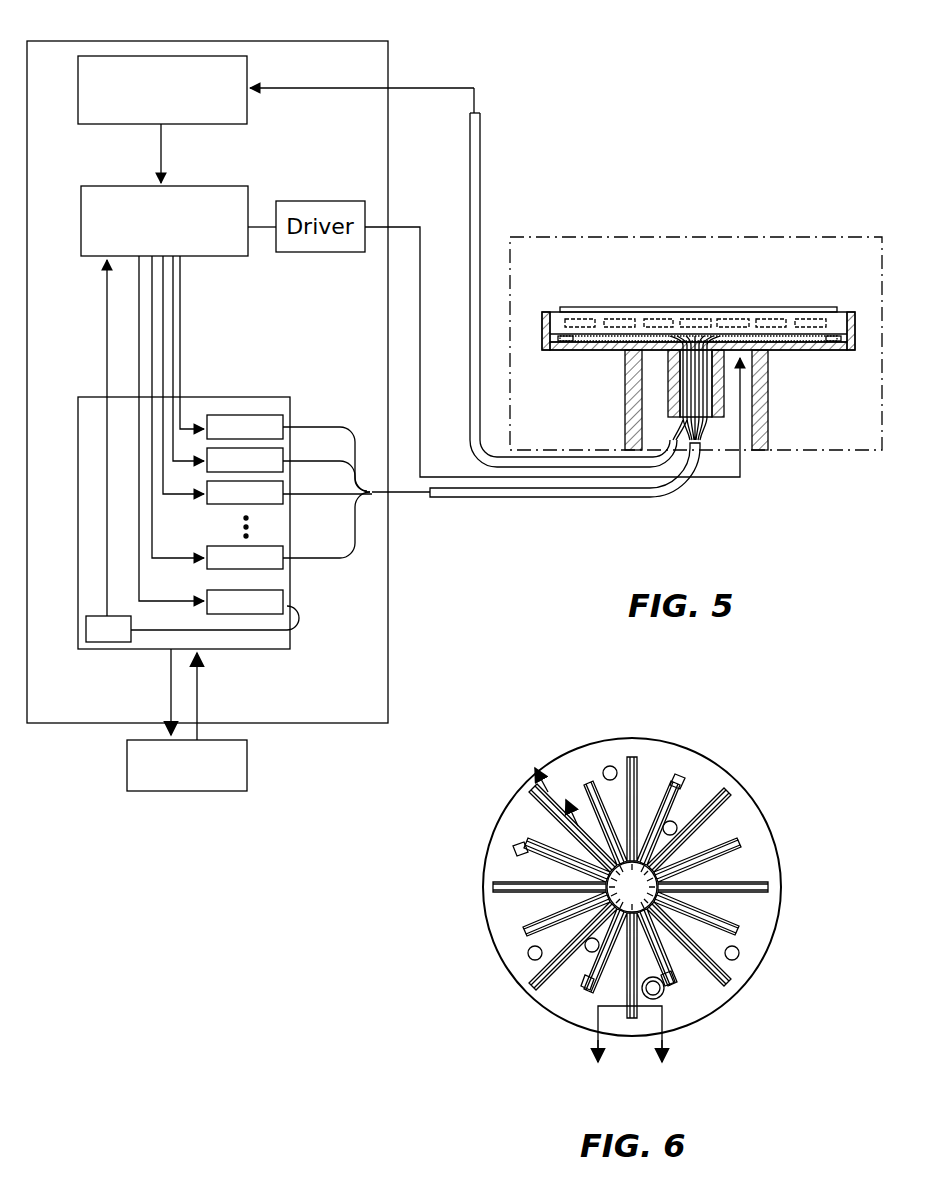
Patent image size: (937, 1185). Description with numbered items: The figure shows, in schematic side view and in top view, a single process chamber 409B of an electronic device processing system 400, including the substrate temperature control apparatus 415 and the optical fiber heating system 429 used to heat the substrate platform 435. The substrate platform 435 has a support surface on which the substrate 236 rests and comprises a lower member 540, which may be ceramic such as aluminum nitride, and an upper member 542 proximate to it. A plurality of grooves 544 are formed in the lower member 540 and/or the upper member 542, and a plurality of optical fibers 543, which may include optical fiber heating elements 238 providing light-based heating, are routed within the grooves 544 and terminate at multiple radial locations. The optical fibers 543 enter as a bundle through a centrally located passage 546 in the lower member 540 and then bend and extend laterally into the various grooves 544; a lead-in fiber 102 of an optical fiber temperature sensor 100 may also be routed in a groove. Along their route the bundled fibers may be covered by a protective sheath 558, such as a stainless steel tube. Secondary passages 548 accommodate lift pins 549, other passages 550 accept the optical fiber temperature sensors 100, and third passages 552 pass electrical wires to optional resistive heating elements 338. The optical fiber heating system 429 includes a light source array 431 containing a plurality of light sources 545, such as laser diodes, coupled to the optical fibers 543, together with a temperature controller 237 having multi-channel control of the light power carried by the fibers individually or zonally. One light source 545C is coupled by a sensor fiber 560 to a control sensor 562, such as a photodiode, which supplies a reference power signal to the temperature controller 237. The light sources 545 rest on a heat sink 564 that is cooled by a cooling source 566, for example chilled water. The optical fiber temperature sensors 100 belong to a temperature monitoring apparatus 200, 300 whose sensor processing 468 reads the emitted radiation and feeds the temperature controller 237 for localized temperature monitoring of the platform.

In FIG. 5, the temperature monitoring apparatus 200 is at (244, 361).
In FIG. 5, the temperature monitoring apparatus 300 is at (278, 62).
In FIG. 5, the sensor processing 468 is at (169, 56).
In FIG. 5, the temperature controller 237 is at (200, 186).
In FIG. 5, the substrate temperature control apparatus 415 is at (492, 98).
In FIG. 5, the electronic device processing system 400 is at (654, 94).
In FIG. 5, the process chamber 409B is at (678, 237).
In FIG. 5, the substrate platform 435 is at (702, 296).
In FIG. 6, the substrate platform 435 is at (622, 890).
In FIG. 5, the lower member 540 is at (794, 350).
In FIG. 6, the lower member 540 is at (661, 742).
In FIG. 5, the substrate 236 is at (676, 307).
In FIG. 5, the grooves 544 is at (603, 341).
In FIG. 6, the grooves 544 is at (720, 862).
In FIG. 5, the optical fiber heating elements 238 is at (570, 319).
In FIG. 5, the upper member 542 is at (612, 319).
In FIG. 5, the optical fibers 543 is at (622, 327).
In FIG. 6, the optical fibers 543 is at (678, 887).
In FIG. 5, the heating elements 338 is at (800, 322).
In FIG. 5, the passage 546 is at (716, 397).
In FIG. 6, the passage 546 is at (556, 932).
In FIG. 5, the lead-in fiber 102 is at (676, 430).
In FIG. 5, the protective sheath 558 is at (535, 500).
In FIG. 5, the optical fiber heating system 429 is at (342, 378).
In FIG. 5, the light source array 431 is at (230, 397).
In FIG. 5, the light sources 545 is at (230, 430).
In FIG. 5, the light source 545C is at (240, 602).
In FIG. 5, the control sensor 562 is at (110, 630).
In FIG. 5, the sensor fiber 560 is at (297, 618).
In FIG. 5, the cooling source 566 is at (186, 792).
In FIG. 5, the heat sink 564 is at (147, 651).
In FIG. 6, the optical fiber temperature sensor 100 is at (684, 786).
In FIG. 6, the other passages 550 is at (610, 766).
In FIG. 6, the third passages 552 is at (676, 822).
In FIG. 6, the secondary passages 548 is at (727, 1019).
In FIG. 6, the lift pins 549 is at (663, 994).